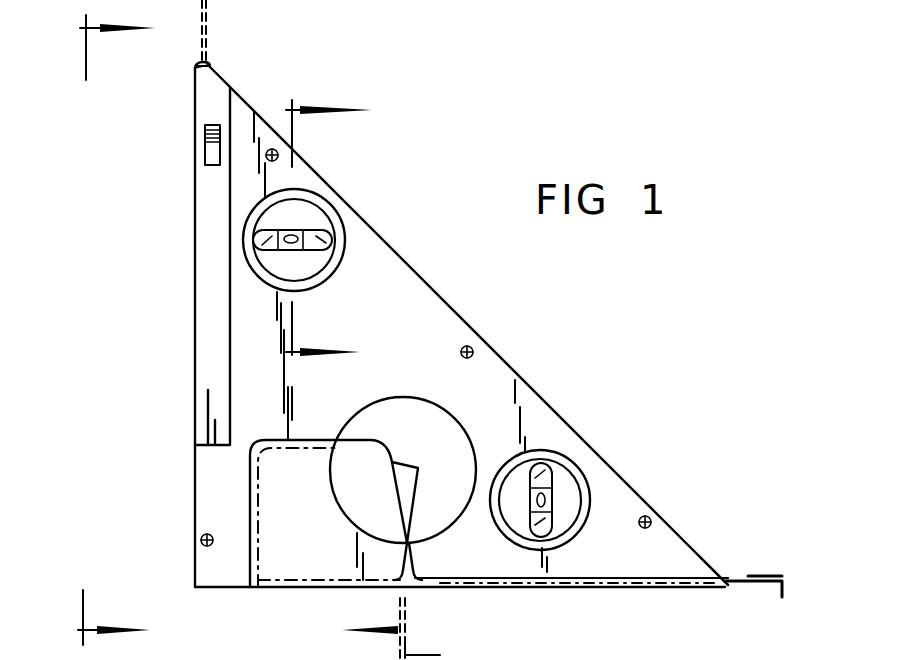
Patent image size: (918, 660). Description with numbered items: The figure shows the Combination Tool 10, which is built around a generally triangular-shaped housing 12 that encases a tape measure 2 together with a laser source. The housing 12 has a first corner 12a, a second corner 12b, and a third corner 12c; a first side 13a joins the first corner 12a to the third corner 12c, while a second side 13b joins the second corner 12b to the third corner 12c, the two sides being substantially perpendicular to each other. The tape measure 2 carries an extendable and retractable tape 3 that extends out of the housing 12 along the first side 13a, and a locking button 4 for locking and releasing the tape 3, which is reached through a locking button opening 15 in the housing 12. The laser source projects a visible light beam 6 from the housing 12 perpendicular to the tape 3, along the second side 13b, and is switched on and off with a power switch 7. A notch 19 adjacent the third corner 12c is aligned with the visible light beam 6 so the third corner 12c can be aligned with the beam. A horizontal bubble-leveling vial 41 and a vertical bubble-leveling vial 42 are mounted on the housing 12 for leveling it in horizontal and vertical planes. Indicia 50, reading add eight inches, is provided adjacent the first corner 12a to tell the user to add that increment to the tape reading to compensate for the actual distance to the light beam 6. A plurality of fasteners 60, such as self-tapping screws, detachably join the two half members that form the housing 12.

The tape measure 2 is at (363, 498).
The extendable and retractable tape 3 is at (750, 590).
The locking button 4 is at (402, 480).
The visible light beam 6 is at (205, 22).
The power switch 7 is at (206, 135).
The Combination Tool 10 is at (668, 354).
The housing 12 is at (430, 272).
The first corner 12a is at (693, 572).
The second corner 12b is at (218, 76).
The third corner 12c is at (193, 583).
The first side 13a is at (520, 590).
The second side 13b is at (191, 311).
The locking button opening 15 is at (400, 420).
The notch 19 is at (203, 592).
The horizontal bubble-leveling vial 41 is at (312, 235).
The vertical bubble-leveling vial 42 is at (546, 480).
The indicia 50 is at (668, 539).
The fasteners 60 is at (280, 152).